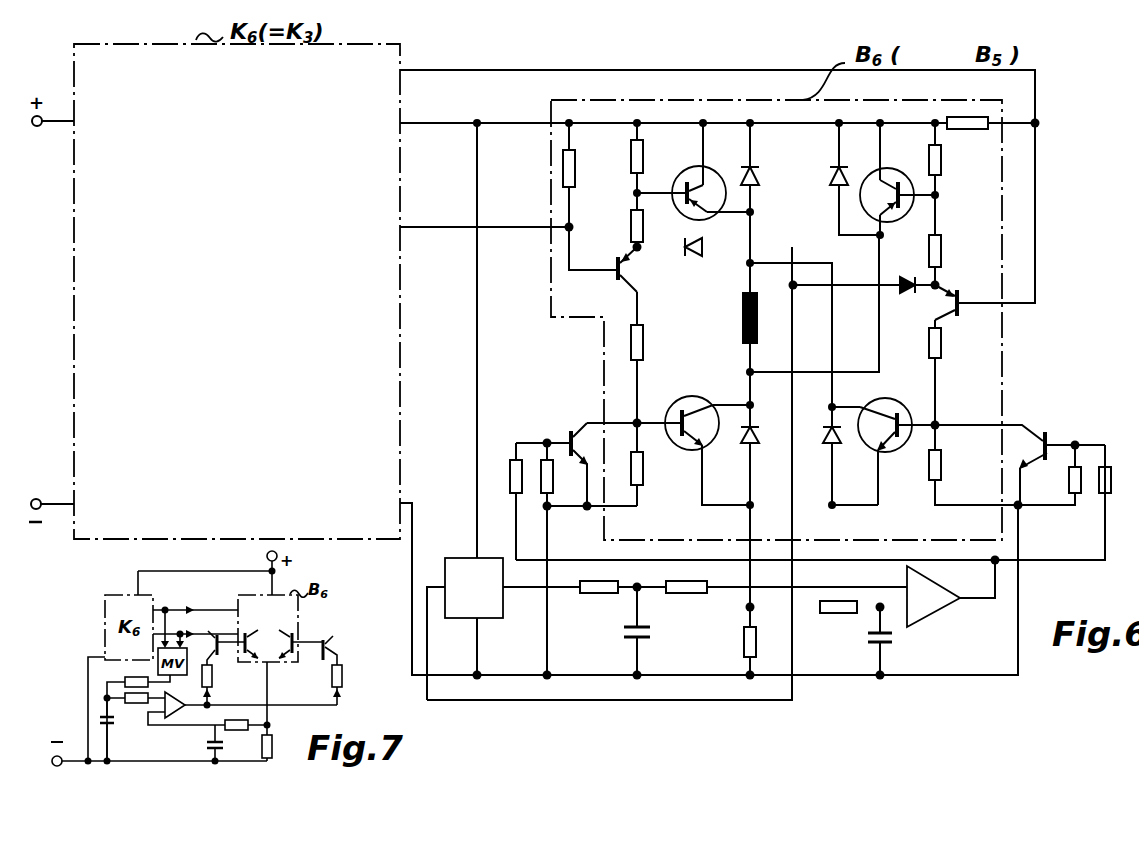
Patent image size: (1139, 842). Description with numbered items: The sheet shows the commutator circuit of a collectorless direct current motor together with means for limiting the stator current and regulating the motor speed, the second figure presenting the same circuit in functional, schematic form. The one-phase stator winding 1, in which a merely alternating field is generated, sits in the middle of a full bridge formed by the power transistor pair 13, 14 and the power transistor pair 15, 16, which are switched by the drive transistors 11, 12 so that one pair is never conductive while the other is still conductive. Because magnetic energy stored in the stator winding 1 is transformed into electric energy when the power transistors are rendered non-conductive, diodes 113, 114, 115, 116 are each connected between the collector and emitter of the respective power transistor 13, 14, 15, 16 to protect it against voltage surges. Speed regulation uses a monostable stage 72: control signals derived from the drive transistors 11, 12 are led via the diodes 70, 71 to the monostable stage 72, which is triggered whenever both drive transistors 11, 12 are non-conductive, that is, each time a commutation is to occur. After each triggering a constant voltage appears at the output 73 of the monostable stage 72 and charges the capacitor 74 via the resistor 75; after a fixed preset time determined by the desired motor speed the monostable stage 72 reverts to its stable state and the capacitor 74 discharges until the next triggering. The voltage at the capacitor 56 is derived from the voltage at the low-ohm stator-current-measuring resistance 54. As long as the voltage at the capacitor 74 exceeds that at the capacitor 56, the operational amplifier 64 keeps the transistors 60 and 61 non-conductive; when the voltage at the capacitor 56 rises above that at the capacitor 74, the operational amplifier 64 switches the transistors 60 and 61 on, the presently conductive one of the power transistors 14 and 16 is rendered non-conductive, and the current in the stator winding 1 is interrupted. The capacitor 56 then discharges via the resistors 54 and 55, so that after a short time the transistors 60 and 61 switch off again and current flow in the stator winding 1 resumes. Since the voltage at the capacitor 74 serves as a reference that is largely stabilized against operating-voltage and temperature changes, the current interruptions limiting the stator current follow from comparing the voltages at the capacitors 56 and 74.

In FIG. 6, the stator winding 1 is at (758, 318).
In FIG. 6, the drive transistor 11 is at (966, 301).
In FIG. 6, the drive transistor 12 is at (626, 279).
In FIG. 6, the power transistor 13 is at (699, 182).
In FIG. 6, the power transistor 14 is at (692, 412).
In FIG. 7, the power transistor 14 is at (255, 638).
In FIG. 6, the power transistor 15 is at (888, 183).
In FIG. 6, the power transistor 16 is at (892, 416).
In FIG. 7, the power transistor 16 is at (300, 638).
In FIG. 6, the stator-current-measuring resistance 54 is at (733, 644).
In FIG. 6, the resistor 55 is at (838, 619).
In FIG. 6, the capacitor 56 is at (871, 641).
In FIG. 6, the transistor 60 is at (1056, 444).
In FIG. 6, the transistor 61 is at (581, 455).
In FIG. 6, the operational amplifier 64 is at (933, 596).
In FIG. 6, the diode 70 is at (909, 300).
In FIG. 6, the diode 71 is at (697, 261).
In FIG. 6, the monostable stage 72 is at (474, 588).
In FIG. 6, the output of the monostable stage 73 is at (531, 600).
In FIG. 6, the capacitor 74 is at (628, 631).
In FIG. 6, the resistor 75 is at (599, 600).
In FIG. 6, the diode 113 is at (769, 190).
In FIG. 6, the diode 114 is at (767, 450).
In FIG. 6, the diode 115 is at (831, 190).
In FIG. 6, the diode 116 is at (823, 450).